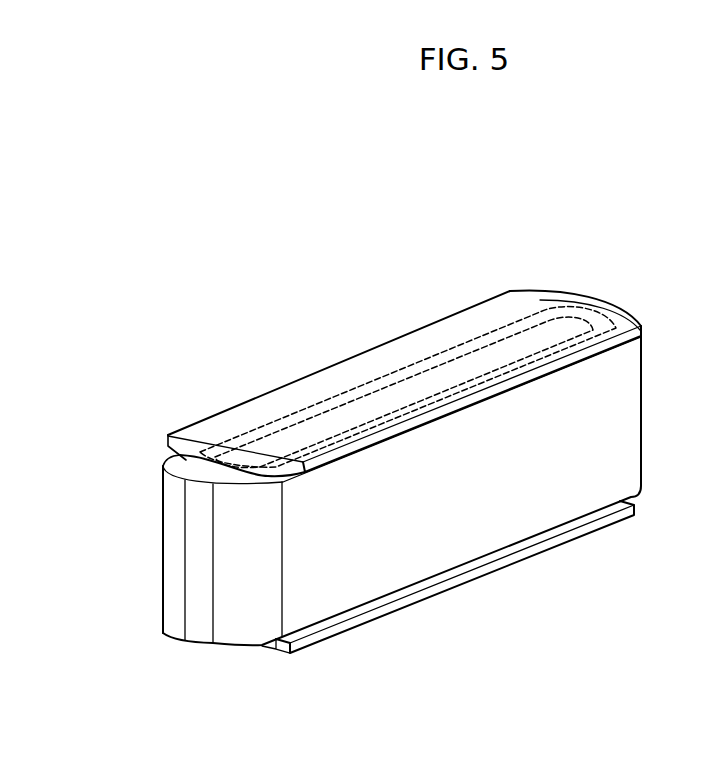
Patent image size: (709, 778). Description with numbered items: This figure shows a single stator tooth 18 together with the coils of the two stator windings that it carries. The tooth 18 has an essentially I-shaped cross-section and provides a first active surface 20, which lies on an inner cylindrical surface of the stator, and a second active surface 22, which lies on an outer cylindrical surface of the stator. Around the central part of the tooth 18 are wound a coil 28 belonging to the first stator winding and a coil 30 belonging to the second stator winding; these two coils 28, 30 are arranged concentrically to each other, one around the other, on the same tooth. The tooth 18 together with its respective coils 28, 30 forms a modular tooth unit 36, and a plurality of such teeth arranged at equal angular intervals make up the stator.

The tooth 18 is at (351, 353).
The first active surface 20 is at (485, 578).
The second active surface 22 is at (620, 308).
The coil of the first stator winding 28 is at (303, 416).
The coil of the second stator winding 30 is at (240, 612).
The modular tooth unit 36 is at (135, 570).